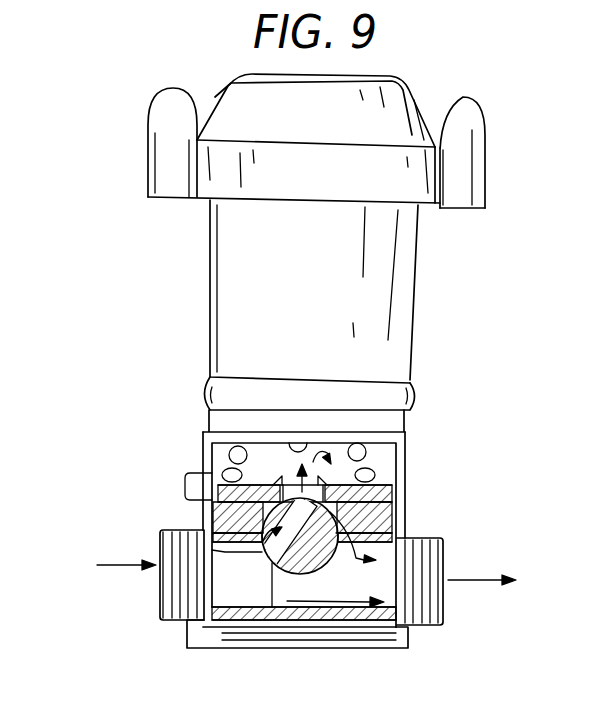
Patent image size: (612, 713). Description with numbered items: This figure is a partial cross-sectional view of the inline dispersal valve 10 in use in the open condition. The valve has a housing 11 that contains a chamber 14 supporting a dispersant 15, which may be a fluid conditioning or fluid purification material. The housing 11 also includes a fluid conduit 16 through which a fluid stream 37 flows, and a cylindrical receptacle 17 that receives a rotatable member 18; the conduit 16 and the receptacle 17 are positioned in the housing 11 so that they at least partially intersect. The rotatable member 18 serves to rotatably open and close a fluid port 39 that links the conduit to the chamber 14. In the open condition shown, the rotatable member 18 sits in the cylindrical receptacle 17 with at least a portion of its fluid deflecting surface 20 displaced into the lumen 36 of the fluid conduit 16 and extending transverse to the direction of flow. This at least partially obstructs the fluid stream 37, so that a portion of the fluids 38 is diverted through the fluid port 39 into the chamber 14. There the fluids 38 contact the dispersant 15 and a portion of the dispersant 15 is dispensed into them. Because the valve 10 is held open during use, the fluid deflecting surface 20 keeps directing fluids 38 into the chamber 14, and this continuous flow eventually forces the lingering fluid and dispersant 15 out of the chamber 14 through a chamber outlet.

The inline dispersal valve 10 is at (493, 261).
The housing 11 is at (413, 322).
The chamber 14 is at (280, 473).
The dispersant 15 is at (223, 447).
The fluid conduit 16 is at (183, 620).
The cylindrical receptacle 17 is at (267, 550).
The rotatable member 18 is at (352, 490).
The fluid deflecting surface 20 is at (272, 565).
The lumen 36 is at (352, 595).
The fluid stream 37 is at (122, 568).
The fluids 38 is at (237, 545).
The fluid port 39 is at (320, 482).